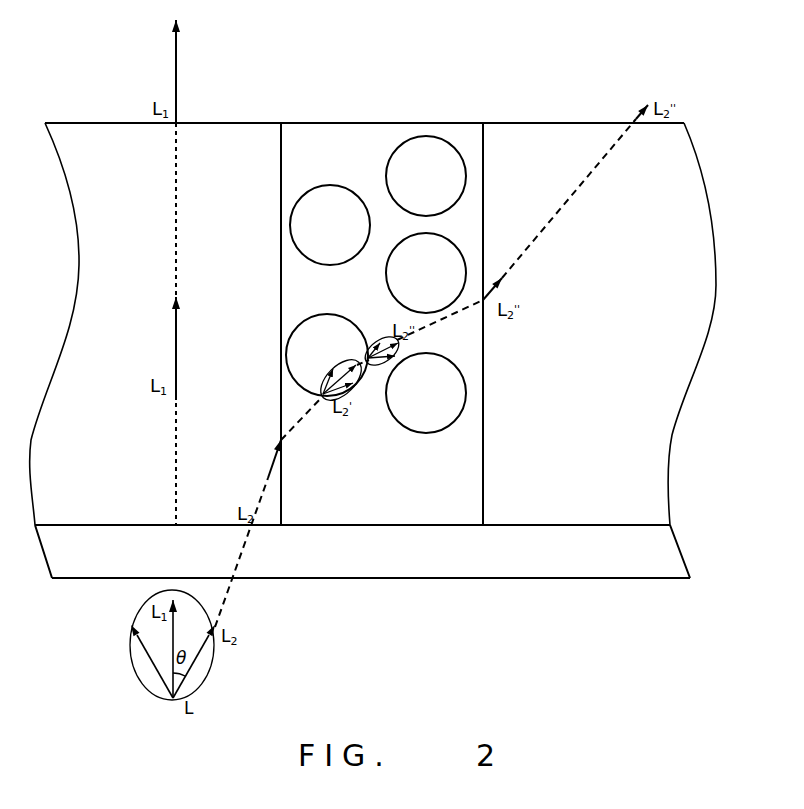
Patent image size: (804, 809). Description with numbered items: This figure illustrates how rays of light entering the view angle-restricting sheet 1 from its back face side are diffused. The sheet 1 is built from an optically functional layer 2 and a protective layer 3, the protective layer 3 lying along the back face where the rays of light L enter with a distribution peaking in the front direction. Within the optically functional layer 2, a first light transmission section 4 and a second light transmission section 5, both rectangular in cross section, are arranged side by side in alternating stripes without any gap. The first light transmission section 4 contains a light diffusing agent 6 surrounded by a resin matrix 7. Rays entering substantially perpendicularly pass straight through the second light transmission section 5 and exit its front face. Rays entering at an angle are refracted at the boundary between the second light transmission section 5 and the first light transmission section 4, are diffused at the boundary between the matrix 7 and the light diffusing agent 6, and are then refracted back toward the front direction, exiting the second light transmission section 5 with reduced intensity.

The view angle-restricting sheet 1 is at (701, 80).
The optically functional layer 2 is at (725, 283).
The protective layer 3 is at (662, 547).
The first light transmission section 4 is at (377, 103).
The second light transmission section 5 is at (566, 483).
The light diffusing agent 6 is at (319, 210).
The resin matrix 7 is at (407, 483).